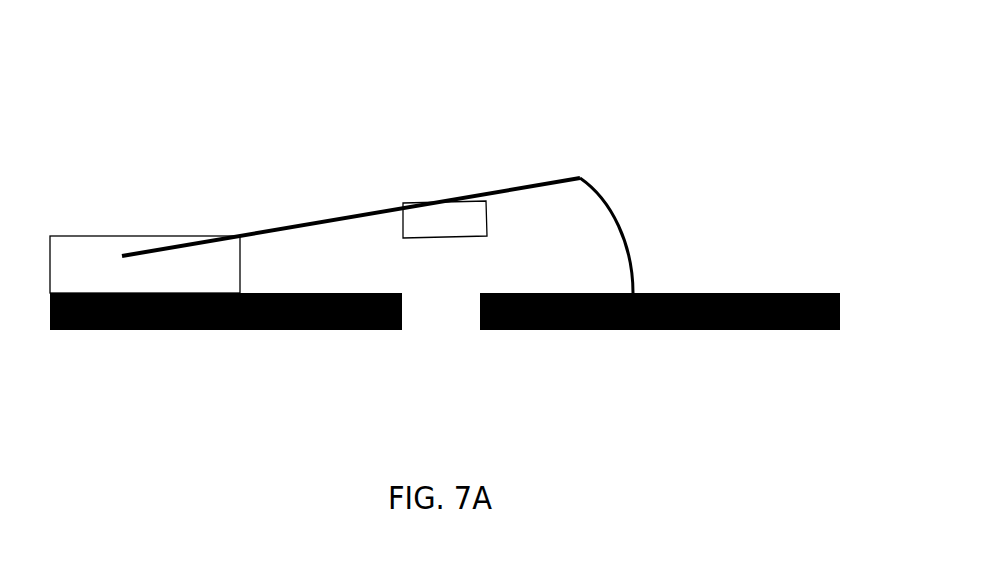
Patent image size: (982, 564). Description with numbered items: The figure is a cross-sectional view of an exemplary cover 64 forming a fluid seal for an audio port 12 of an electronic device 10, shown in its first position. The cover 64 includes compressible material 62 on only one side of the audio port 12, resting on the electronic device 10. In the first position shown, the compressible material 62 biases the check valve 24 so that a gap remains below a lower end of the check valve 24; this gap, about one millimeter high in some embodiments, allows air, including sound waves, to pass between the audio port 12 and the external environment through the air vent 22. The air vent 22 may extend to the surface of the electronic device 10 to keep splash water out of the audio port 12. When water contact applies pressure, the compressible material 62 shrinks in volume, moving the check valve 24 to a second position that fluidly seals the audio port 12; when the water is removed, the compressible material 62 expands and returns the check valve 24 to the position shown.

The electronic device 10 is at (117, 330).
The audio port 12 is at (425, 328).
The air vent 22 is at (320, 220).
The check valve 24 is at (433, 229).
The compressible material 62 is at (88, 247).
The cover 64 is at (240, 100).